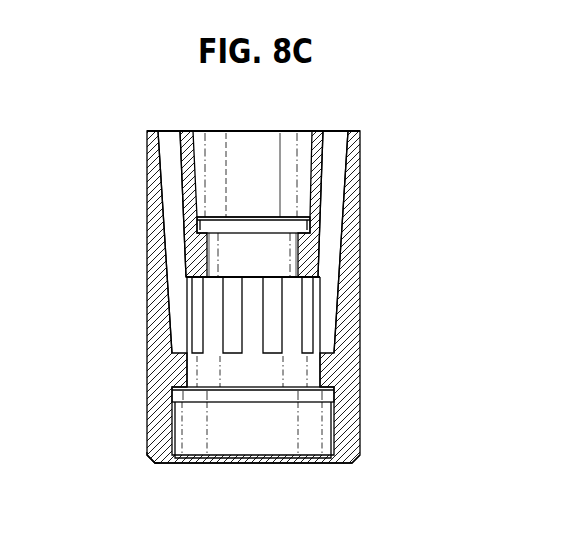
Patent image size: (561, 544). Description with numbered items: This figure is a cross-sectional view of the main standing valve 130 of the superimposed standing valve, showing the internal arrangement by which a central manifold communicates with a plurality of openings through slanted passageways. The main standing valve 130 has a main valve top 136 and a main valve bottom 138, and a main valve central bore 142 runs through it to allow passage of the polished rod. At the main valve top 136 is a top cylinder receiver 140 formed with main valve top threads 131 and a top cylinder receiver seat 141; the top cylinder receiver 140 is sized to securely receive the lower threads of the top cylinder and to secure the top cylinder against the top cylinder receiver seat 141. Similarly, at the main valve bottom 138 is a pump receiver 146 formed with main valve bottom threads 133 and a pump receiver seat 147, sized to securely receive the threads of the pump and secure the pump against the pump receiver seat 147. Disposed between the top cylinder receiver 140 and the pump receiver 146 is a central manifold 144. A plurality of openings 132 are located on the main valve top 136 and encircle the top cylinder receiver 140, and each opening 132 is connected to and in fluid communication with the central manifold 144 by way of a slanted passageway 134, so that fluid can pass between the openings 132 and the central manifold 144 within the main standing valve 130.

The main standing valve 130 is at (362, 181).
The main valve top threads 131 is at (197, 142).
The openings 132 is at (170, 131).
The main valve bottom threads 133 is at (153, 463).
The slanted passageway 134 is at (177, 258).
The main valve top 136 is at (360, 131).
The main valve bottom 138 is at (313, 463).
The top cylinder receiver 140 is at (257, 137).
The top cylinder receiver seat 141 is at (197, 221).
The main valve central bore 142 is at (287, 257).
The central manifold 144 is at (302, 363).
The pump receiver 146 is at (258, 430).
The pump receiver seat 147 is at (323, 388).